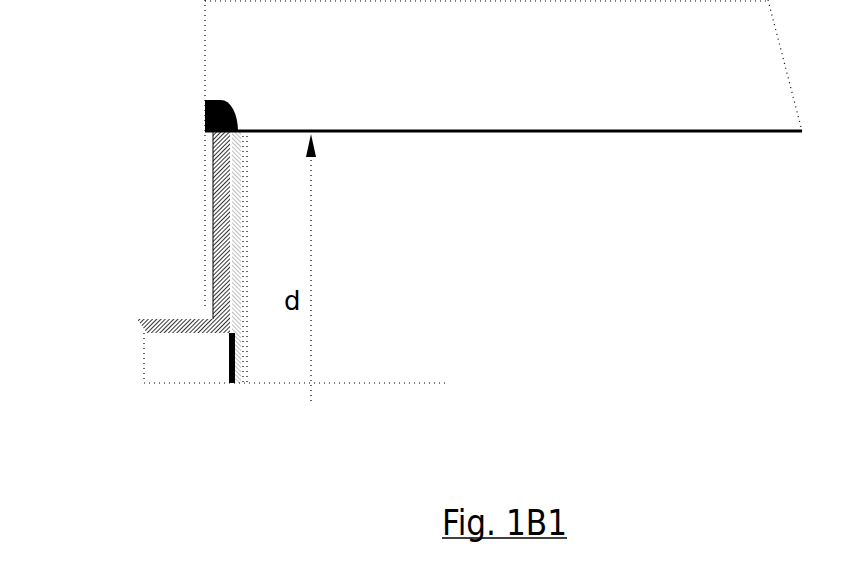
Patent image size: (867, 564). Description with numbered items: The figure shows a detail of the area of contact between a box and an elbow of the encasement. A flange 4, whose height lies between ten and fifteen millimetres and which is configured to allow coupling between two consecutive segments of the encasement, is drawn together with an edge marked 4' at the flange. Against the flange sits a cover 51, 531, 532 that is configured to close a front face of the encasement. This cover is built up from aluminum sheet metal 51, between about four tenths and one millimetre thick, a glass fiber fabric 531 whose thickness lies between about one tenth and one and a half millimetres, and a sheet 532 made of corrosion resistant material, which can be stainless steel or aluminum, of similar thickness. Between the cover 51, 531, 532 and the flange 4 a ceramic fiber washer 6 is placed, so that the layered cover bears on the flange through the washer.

The flange 4 is at (171, 183).
The sealing lip edge 4' is at (122, 189).
The ceramic fiber washer 6 is at (204, 258).
The aluminum sheet metal 51 is at (300, 465).
The glass fiber fabric 531 is at (240, 384).
The sheet made of corrosion resistant material 532 is at (244, 384).